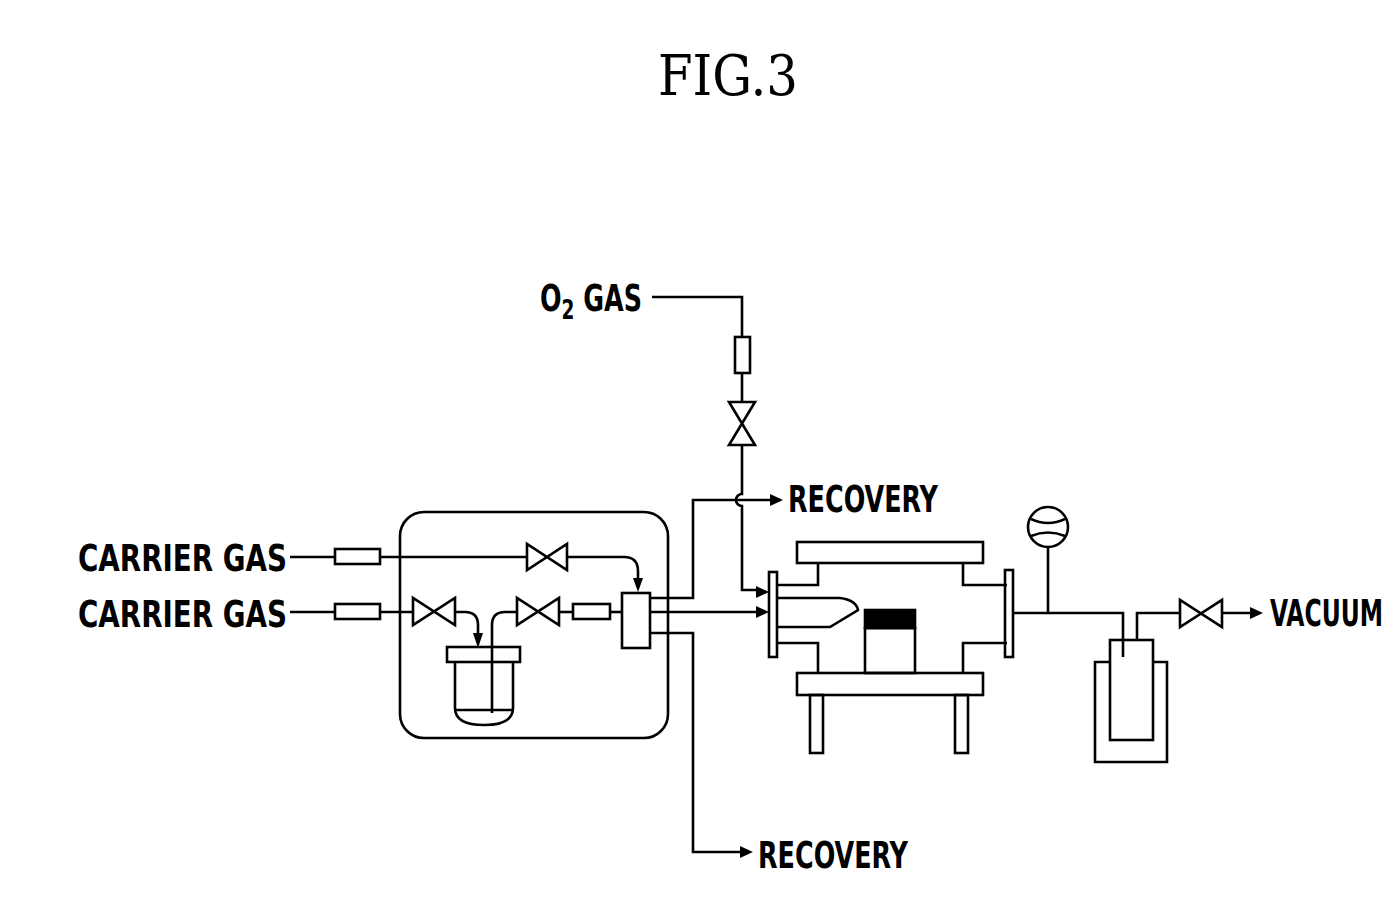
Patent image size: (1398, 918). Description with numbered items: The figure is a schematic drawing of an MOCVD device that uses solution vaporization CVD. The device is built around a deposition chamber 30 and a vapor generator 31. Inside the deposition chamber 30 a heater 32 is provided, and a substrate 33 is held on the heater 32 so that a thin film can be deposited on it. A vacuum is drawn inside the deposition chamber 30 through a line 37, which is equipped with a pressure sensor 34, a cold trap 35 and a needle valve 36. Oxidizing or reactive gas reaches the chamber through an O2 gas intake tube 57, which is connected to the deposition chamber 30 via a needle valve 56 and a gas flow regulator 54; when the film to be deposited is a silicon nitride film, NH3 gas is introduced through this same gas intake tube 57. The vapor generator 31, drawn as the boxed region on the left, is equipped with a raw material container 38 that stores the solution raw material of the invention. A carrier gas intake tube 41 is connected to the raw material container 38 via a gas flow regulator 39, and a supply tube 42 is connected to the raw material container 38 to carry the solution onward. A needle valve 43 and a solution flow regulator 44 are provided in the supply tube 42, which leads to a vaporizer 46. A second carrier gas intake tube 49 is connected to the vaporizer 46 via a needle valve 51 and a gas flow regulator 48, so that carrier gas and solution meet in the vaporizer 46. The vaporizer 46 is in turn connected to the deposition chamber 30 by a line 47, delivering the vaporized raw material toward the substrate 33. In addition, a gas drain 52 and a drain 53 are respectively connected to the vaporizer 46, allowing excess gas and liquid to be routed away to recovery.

The deposition chamber 30 is at (958, 542).
The vapor generator 31 is at (479, 513).
The heater 32 is at (889, 665).
The substrate 33 is at (917, 617).
The pressure sensor 34 is at (1067, 528).
The cold trap 35 is at (1168, 715).
The needle valve 36 is at (1192, 601).
The line 37 is at (1063, 615).
The raw material container 38 is at (454, 700).
The gas flow regulator 39 is at (360, 620).
The carrier gas intake tube 41 is at (315, 613).
The supply tube 42 is at (496, 610).
The needle valve 43 is at (547, 626).
The solution flow regulator 44 is at (594, 620).
The vaporizer 46 is at (636, 649).
The line 47 is at (722, 614).
The gas flow regulator 48 is at (362, 549).
The carrier gas intake tube 49 is at (326, 557).
The needle valve 51 is at (555, 544).
The gas drain 52 is at (711, 500).
The drain 53 is at (692, 750).
The gas flow regulator 54 is at (750, 350).
The needle valve 56 is at (755, 412).
The O2 gas intake tube 57 is at (700, 297).